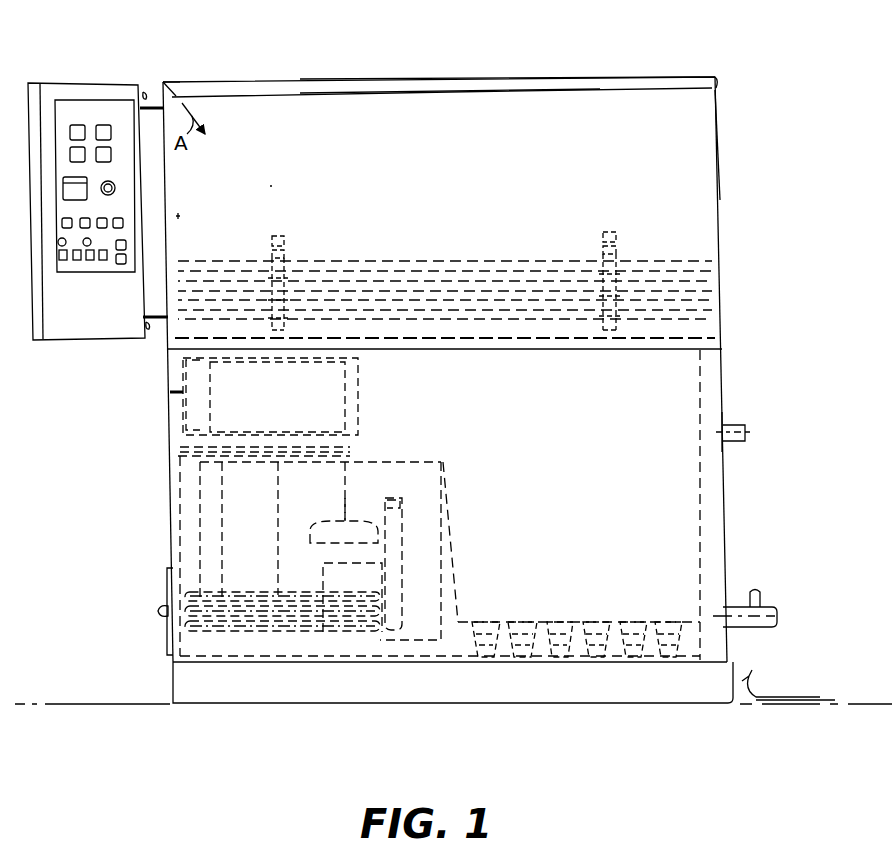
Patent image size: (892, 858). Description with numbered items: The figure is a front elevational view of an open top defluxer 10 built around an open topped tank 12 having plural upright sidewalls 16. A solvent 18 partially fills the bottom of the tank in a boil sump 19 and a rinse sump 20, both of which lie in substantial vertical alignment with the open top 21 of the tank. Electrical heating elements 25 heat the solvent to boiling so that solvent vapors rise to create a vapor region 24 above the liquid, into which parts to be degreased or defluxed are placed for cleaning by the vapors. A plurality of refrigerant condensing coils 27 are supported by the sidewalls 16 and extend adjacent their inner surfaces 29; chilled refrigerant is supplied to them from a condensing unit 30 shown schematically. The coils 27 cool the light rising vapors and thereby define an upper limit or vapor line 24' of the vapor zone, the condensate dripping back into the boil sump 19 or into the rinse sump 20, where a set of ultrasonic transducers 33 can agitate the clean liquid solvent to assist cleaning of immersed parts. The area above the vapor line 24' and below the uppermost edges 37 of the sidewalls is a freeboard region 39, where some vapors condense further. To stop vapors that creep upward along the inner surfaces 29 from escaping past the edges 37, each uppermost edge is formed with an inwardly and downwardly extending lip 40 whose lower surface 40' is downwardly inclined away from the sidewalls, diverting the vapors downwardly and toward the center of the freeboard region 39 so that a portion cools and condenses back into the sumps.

The open top defluxer 10 is at (112, 521).
The open topped tank 12 is at (437, 106).
The upright sidewalls 16 is at (441, 130).
The solvent 18 is at (598, 557).
The boil sump 19 is at (418, 559).
The rinse sump 20 is at (648, 591).
The open top 21 is at (359, 117).
The vapor region 24 is at (445, 369).
The vapor line 24' is at (445, 277).
The electrical heating elements 25 is at (298, 633).
The refrigerant condensing coils 27 is at (412, 262).
The inner surfaces 29 is at (172, 206).
The condensing unit 30 is at (382, 386).
The ultrasonic transducers 33 is at (603, 645).
The uppermost edges 37 is at (505, 77).
The freeboard region 39 is at (271, 183).
The lip 40 is at (677, 46).
The lower surface 40' is at (207, 59).